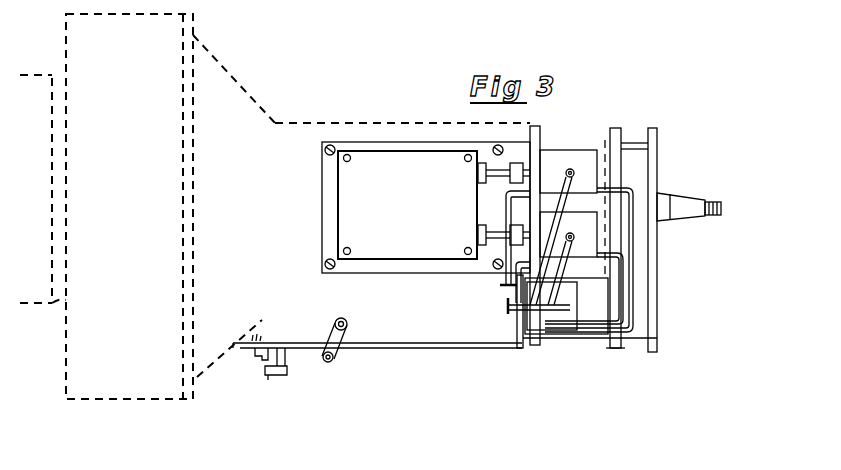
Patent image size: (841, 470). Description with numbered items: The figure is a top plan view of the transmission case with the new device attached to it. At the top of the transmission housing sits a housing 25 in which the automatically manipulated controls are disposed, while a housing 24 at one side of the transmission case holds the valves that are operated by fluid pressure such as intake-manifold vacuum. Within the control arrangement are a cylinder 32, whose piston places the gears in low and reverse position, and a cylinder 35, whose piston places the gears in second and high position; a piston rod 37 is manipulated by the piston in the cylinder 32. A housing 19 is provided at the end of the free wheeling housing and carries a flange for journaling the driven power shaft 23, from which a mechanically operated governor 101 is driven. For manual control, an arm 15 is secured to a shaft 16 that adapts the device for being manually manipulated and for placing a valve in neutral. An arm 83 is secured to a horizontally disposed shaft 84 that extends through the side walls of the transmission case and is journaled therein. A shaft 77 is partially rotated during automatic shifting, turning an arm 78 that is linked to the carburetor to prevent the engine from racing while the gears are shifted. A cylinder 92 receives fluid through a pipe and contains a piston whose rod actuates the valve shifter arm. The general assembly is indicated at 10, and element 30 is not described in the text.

The housing 10 is at (600, 140).
The arm 15 is at (240, 348).
The shaft 16 is at (266, 352).
The housing 19 is at (628, 164).
The driven power shaft 23 is at (680, 203).
The housing 24 is at (432, 338).
The housing 25 is at (364, 188).
The conduit 30 is at (498, 250).
The cylinder 32 is at (569, 140).
The cylinder 35 is at (585, 245).
The piston rod 37 is at (502, 190).
The shaft 77 is at (348, 322).
The arm 78 is at (335, 357).
The arm 83 is at (270, 378).
The horizontally disposed shaft 84 is at (276, 375).
The cylinder 92 is at (565, 320).
The mechanically operated governor 101 is at (592, 305).